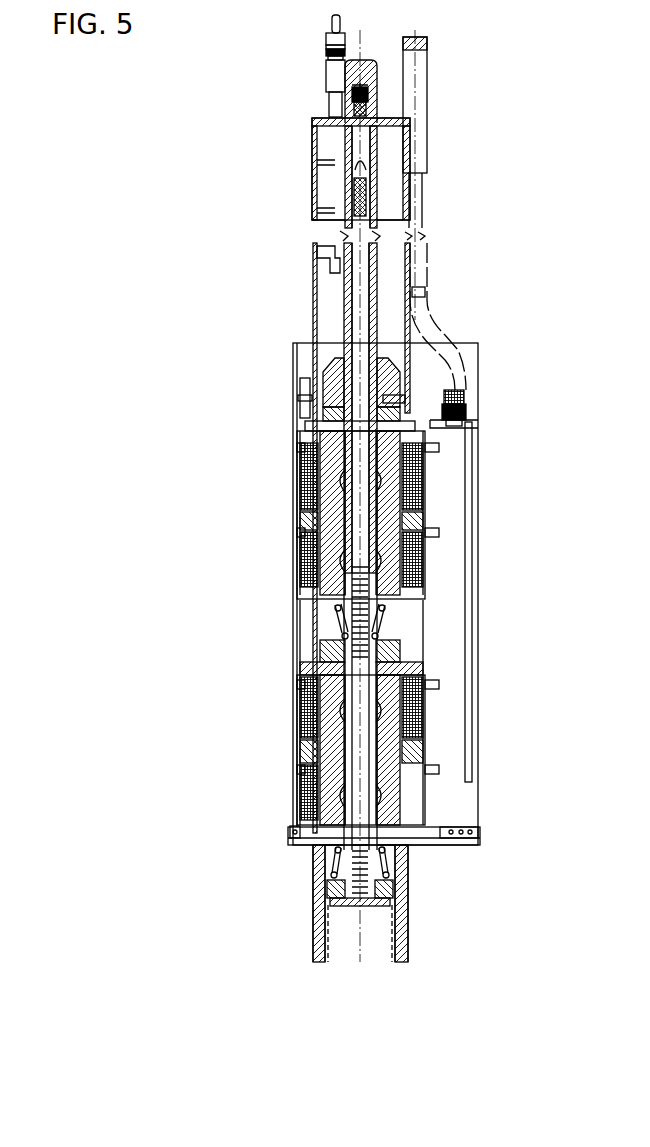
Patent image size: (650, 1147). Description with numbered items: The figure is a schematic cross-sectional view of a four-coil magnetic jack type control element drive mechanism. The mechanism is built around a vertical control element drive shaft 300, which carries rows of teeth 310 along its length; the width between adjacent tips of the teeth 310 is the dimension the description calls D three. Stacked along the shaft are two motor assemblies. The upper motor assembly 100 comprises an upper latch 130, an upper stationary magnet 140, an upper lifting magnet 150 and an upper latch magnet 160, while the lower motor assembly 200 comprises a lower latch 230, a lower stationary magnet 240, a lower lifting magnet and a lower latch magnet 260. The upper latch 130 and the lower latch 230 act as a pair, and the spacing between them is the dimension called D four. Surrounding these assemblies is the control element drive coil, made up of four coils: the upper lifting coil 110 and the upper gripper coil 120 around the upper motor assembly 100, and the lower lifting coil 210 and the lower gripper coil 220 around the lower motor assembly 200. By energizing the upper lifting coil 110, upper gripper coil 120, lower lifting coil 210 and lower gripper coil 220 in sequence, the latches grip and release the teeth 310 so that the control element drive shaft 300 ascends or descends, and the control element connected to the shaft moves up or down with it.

The upper motor assembly 100 is at (405, 508).
The upper lifting (UL) coil 110 is at (310, 475).
The upper gripper (UG) coil 120 is at (310, 567).
The upper latch 130 is at (405, 615).
The upper stationary magnet 140 is at (390, 423).
The upper lifting magnet 150 is at (427, 520).
The upper latch magnet 160 is at (436, 614).
The lower motor assembly 200 is at (405, 818).
The lower lifting (LL) coil 210 is at (310, 712).
The lower gripper (LG) coil 220 is at (405, 783).
The lower latch 230 is at (413, 830).
The lower stationary magnet 240 is at (425, 700).
The lower latch magnet 260 is at (390, 853).
The control element drive shaft 300 is at (358, 524).
The teeth 310 is at (345, 625).